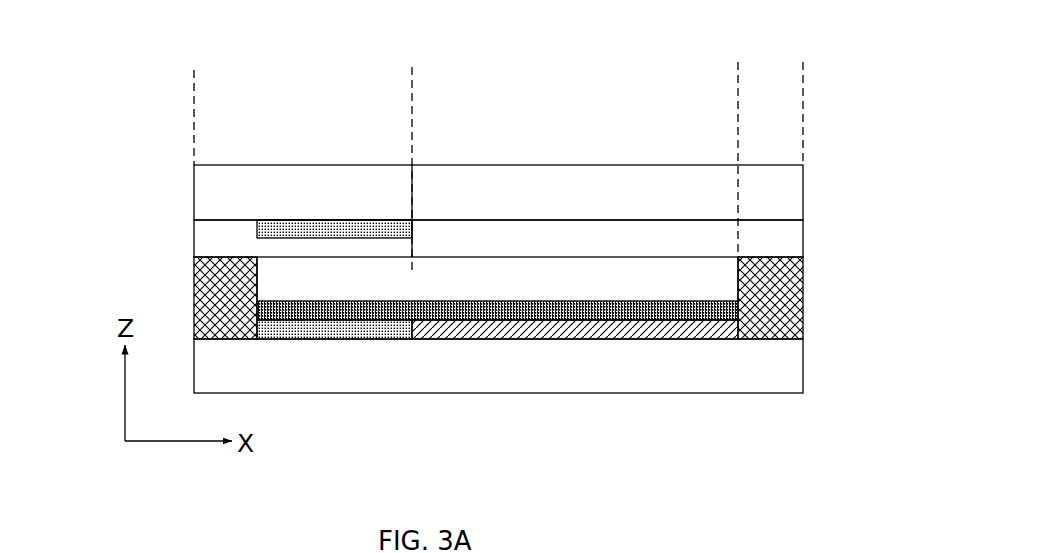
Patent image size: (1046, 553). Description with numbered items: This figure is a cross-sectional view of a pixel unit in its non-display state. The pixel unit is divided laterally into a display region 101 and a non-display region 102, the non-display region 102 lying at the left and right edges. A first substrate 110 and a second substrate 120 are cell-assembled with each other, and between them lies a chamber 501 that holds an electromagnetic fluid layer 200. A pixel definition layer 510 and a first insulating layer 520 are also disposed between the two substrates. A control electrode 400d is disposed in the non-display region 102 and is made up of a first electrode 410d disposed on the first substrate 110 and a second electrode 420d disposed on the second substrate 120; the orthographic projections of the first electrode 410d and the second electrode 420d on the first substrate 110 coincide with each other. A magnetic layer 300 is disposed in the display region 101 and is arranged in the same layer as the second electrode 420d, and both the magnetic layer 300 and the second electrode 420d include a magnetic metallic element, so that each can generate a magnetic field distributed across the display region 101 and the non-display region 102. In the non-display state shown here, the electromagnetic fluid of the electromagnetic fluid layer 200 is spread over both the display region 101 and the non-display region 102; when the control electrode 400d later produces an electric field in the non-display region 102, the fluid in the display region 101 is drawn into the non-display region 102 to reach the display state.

The display region 101 is at (738, 95).
The non-display region 102 is at (412, 83).
The first substrate 110 is at (447, 203).
The second substrate 120 is at (382, 369).
The electromagnetic fluid layer 200 is at (577, 307).
The magnetic layer 300 is at (473, 325).
The control electrode 400d is at (216, 223).
The first electrode 410d is at (285, 227).
The second electrode 420d is at (333, 323).
The chamber 501 is at (545, 270).
The pixel definition layer 510 is at (220, 301).
The first insulating layer 520 is at (790, 243).